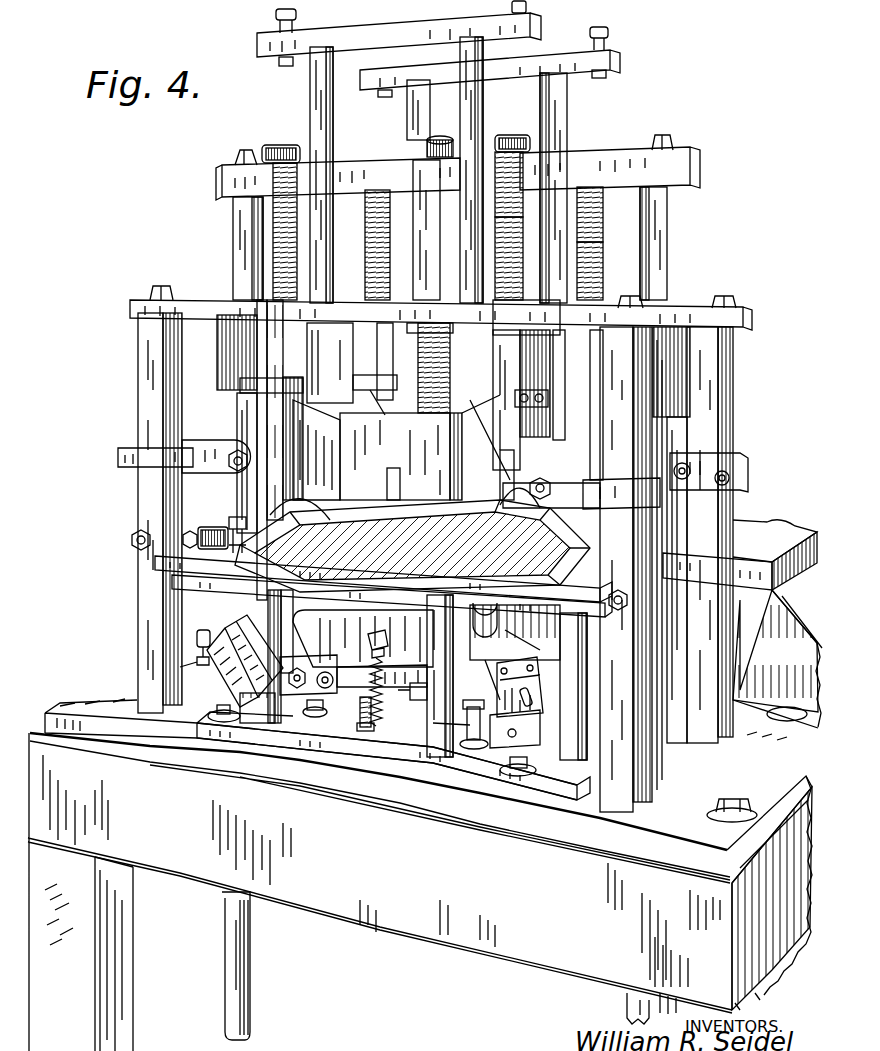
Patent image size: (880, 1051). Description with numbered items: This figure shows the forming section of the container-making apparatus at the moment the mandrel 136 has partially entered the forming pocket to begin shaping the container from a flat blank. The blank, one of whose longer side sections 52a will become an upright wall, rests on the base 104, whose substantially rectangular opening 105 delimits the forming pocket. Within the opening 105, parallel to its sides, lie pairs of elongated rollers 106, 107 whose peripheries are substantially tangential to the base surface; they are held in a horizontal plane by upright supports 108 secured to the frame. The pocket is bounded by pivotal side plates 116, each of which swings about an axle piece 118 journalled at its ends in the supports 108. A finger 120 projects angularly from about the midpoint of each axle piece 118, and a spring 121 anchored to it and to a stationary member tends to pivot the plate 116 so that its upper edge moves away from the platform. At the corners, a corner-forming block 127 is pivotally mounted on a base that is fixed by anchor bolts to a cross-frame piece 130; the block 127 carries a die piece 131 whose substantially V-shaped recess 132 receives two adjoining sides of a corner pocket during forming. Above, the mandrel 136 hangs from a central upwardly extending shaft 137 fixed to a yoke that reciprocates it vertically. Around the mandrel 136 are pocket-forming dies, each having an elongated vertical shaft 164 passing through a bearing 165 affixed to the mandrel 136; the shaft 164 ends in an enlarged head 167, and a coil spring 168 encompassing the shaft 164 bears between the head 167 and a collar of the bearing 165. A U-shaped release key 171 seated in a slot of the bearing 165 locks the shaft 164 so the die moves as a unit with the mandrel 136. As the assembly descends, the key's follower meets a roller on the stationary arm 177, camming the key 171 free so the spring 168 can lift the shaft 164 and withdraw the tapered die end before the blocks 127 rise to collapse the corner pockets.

The shaft 137 is at (423, 232).
The enlarged head 167 is at (512, 135).
The coil spring 168 is at (522, 178).
The shaft 164 is at (522, 195).
The release key 171 is at (537, 382).
The bearing 165 is at (540, 435).
The stationary arm 177 is at (625, 481).
The mandrel 136 is at (310, 515).
The side section 52a is at (412, 540).
The opening 105 is at (165, 557).
The base 104 is at (185, 574).
The rollers 106 is at (257, 597).
The rollers 107 is at (594, 610).
The finger 120 is at (368, 647).
The spring 121 is at (382, 680).
The V-shaped recess 132 is at (525, 660).
The cross-frame piece 130 is at (118, 715).
The corner-forming block 127 is at (225, 660).
The upright supports 108 is at (280, 650).
The pivotal side plate 116 is at (320, 690).
The axle piece 118 is at (405, 690).
The die piece 131 is at (393, 756).